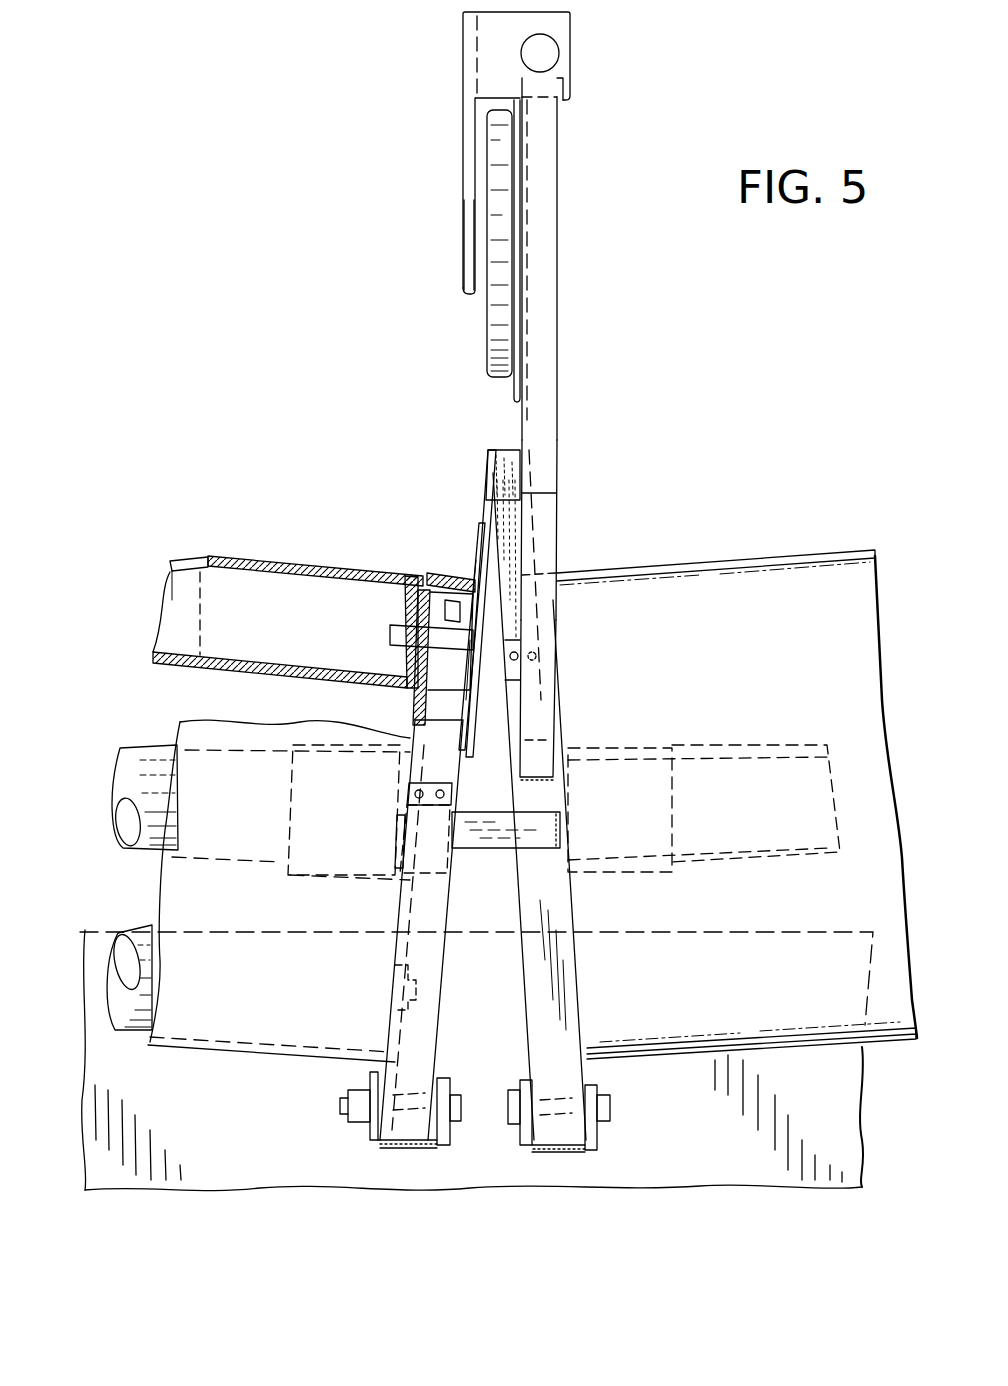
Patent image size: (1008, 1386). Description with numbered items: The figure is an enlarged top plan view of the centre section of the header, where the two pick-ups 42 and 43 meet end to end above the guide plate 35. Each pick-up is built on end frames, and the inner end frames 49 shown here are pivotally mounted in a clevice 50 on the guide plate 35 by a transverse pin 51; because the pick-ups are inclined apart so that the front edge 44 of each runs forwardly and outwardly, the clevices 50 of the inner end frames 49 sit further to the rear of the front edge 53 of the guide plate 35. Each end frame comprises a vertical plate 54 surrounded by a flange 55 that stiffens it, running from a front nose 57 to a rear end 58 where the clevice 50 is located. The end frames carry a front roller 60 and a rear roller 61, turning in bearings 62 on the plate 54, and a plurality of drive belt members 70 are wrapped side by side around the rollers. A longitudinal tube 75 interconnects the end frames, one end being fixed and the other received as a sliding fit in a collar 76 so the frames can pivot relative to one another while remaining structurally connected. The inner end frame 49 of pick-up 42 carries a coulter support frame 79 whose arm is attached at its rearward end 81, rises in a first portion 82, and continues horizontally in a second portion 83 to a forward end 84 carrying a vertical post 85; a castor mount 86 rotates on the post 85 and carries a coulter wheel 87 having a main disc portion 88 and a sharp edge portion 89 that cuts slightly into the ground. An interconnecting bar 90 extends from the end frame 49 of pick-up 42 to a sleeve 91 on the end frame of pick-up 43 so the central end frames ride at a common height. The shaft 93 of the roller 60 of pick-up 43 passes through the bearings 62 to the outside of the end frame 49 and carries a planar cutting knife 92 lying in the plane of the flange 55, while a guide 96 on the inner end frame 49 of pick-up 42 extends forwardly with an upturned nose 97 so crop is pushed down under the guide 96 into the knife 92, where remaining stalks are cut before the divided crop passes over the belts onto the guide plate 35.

The guide plate 35 is at (255, 1160).
The pick-up 42 is at (770, 490).
The pick-up 43 is at (316, 492).
The front edge 44 is at (215, 517).
The inner end frame 49 is at (430, 952).
The clevice 50 is at (370, 1135).
The transverse pin 51 is at (352, 1100).
The front edge of guide plate 53 is at (505, 925).
The vertical plate 54 is at (430, 705).
The flange 55 is at (456, 570).
The front nose 57 is at (414, 568).
The rear end 58 is at (405, 1148).
The roller 60 is at (175, 560).
The roller 61 is at (150, 910).
The bearings 62 is at (405, 600).
The drive belt members 70 is at (294, 552).
The longitudinal tube 75 is at (160, 745).
The collar 76 is at (625, 745).
The coulter support frame 79 is at (582, 290).
The rearward end 81 is at (538, 720).
The first portion 82 is at (550, 520).
The second portion 83 is at (538, 354).
The forward end 84 is at (560, 80).
The vertical post 85 is at (545, 50).
The castor mount 86 is at (460, 183).
The coulter wheel 87 is at (453, 301).
The main disc portion 88 is at (496, 380).
The sharp edge portion 89 is at (512, 412).
The interconnecting bar 90 is at (548, 830).
The sleeve 91 is at (410, 800).
The cutting knife 92 is at (478, 521).
The shaft 93 is at (386, 635).
The guide 96 is at (486, 481).
The upturned nose 97 is at (490, 458).